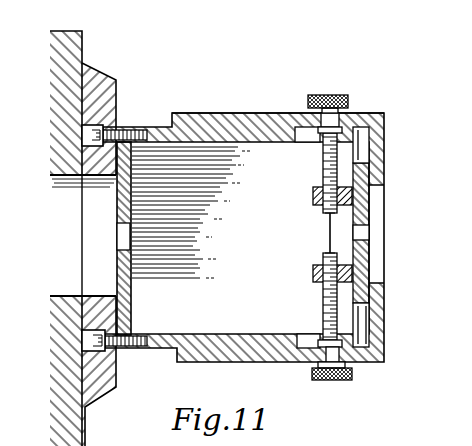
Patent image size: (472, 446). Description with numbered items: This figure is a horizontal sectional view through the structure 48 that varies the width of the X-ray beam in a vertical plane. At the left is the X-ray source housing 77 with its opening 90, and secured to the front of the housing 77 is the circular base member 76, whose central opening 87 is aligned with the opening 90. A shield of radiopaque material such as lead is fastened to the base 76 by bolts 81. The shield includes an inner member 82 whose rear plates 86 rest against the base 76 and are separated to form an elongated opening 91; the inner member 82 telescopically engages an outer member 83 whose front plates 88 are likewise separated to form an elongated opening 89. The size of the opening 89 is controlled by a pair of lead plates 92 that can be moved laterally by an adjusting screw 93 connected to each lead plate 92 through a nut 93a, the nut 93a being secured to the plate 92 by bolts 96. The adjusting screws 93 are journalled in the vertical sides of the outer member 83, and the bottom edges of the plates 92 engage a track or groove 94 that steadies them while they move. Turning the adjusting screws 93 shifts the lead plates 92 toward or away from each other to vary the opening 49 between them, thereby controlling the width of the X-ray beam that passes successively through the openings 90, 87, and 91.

The structure for varying beam width 48 is at (195, 110).
The opening between lead plates 49 is at (349, 233).
The circular base member 76 is at (107, 90).
The X-ray source housing 77 is at (68, 50).
The bolts 81 is at (82, 137).
The inner member 82 is at (153, 127).
The outer member 83 is at (240, 114).
The rear plates 86 is at (117, 193).
The central opening 87 is at (95, 233).
The front plates 88 is at (374, 140).
The elongated opening 89 is at (370, 223).
The opening in X-ray housing 90 is at (72, 265).
The elongated opening 91 is at (131, 246).
The lead plates 92 is at (322, 178).
The adjusting screw 93 is at (322, 153).
The nut 93a is at (315, 202).
The track or groove 94 is at (362, 132).
The bolts 96 is at (372, 184).